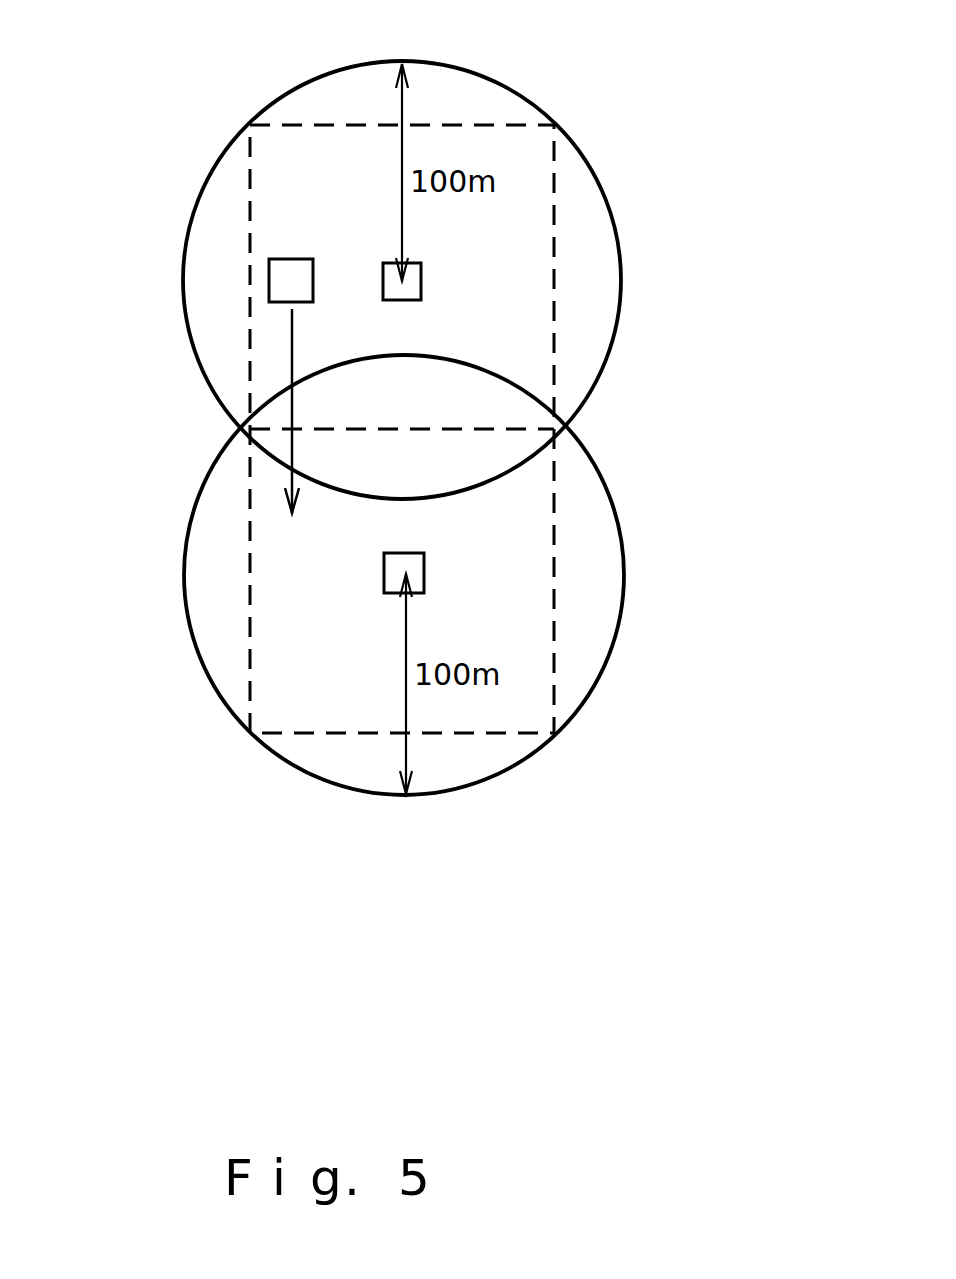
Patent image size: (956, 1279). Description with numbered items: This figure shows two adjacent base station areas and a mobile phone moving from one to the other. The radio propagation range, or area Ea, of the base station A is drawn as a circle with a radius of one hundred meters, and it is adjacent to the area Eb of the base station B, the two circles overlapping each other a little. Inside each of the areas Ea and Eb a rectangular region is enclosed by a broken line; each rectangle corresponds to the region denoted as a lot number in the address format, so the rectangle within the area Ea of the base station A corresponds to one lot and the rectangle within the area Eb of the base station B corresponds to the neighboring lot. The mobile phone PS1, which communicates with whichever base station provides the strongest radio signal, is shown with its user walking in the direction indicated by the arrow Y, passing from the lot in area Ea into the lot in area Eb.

The area of base station A Ea is at (507, 82).
The area of base station B Eb is at (623, 595).
The base station A is at (422, 268).
The base station B is at (425, 572).
The mobile phone PS1 is at (268, 278).
The arrow Y is at (292, 348).